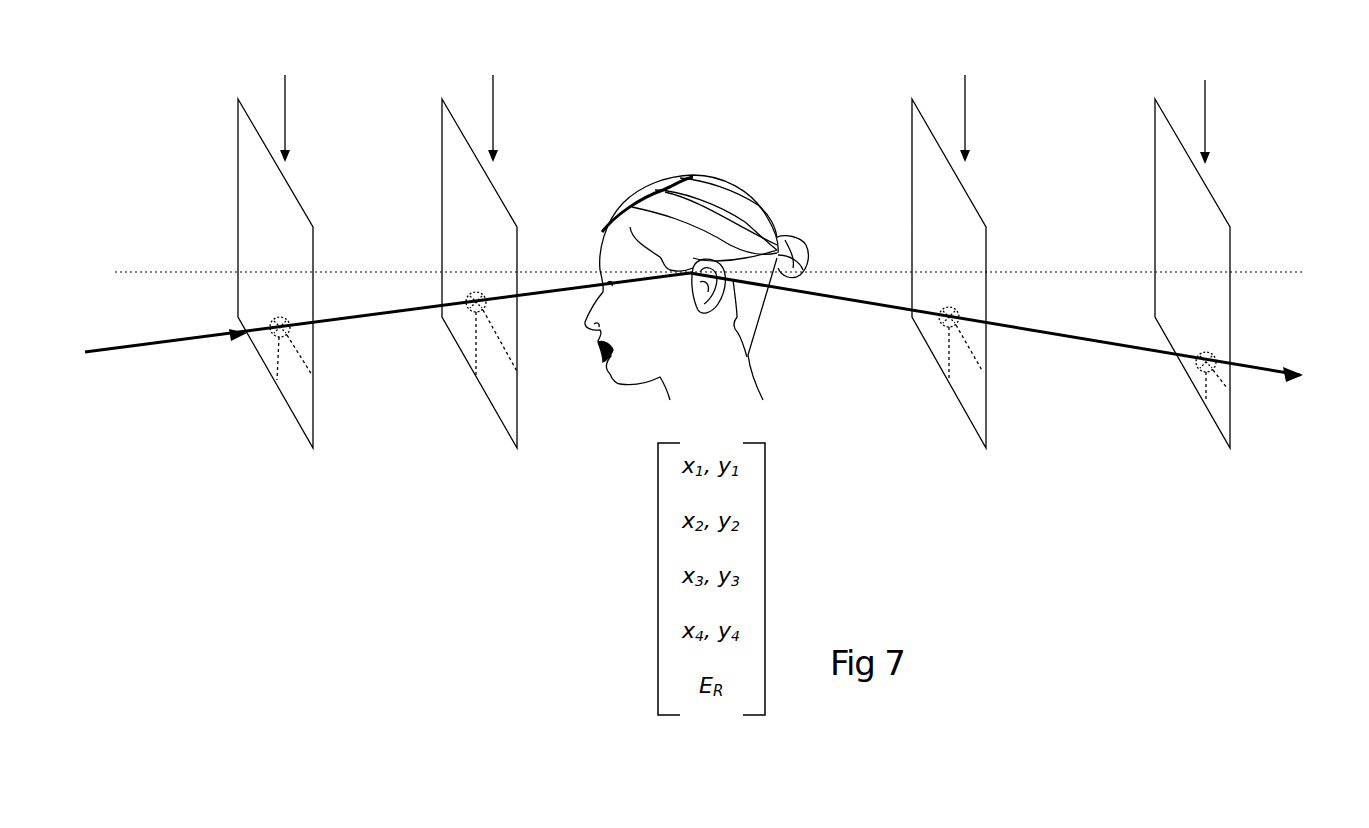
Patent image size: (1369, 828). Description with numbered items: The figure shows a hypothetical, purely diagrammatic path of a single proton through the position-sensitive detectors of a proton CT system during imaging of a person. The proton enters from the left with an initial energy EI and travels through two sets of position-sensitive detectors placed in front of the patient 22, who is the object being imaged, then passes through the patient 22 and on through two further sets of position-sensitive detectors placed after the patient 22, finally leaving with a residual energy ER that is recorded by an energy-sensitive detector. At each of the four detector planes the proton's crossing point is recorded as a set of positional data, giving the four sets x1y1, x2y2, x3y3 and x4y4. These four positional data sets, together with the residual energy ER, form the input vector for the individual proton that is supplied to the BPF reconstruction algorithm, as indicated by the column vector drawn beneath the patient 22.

The patient 22 is at (692, 160).
The initial energy EI is at (376, 312).
The residual energy ER is at (1013, 334).
The positional data x1y1 is at (287, 289).
The positional data x2y2 is at (491, 289).
The positional data x3y3 is at (963, 289).
The positional data x4y4 is at (1205, 291).